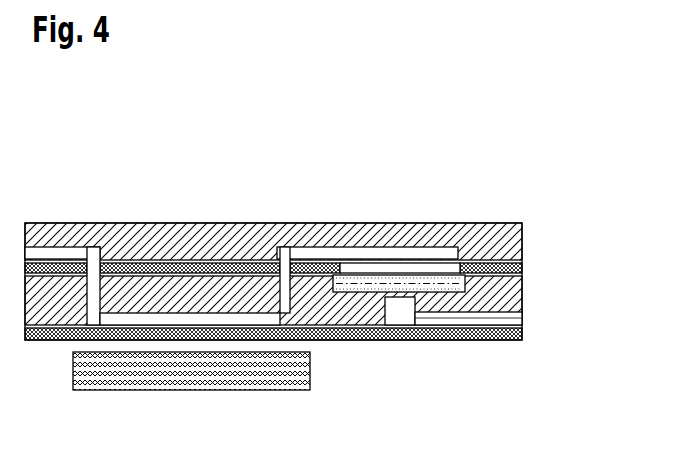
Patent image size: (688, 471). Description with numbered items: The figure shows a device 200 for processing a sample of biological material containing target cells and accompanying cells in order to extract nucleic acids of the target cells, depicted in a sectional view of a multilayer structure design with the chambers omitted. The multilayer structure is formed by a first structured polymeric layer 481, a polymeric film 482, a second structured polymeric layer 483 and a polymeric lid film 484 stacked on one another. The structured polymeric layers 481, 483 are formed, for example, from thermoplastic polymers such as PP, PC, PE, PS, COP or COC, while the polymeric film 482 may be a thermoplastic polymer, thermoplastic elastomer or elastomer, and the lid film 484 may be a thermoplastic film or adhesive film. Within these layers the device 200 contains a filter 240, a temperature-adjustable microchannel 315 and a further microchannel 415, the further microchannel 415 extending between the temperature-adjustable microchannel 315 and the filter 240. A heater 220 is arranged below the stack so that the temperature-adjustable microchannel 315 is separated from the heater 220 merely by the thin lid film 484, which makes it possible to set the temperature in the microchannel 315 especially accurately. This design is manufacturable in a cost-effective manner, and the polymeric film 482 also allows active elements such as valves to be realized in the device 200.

The device 200 is at (558, 120).
The heater 220 is at (175, 368).
The filter 240 is at (403, 288).
The microchannel 315 is at (422, 318).
The further microchannel 415 is at (283, 248).
The first structured polymeric layer 481 is at (522, 232).
The polymeric film 482 is at (522, 268).
The second structured polymeric layer 483 is at (522, 298).
The polymeric lid film 484 is at (522, 335).